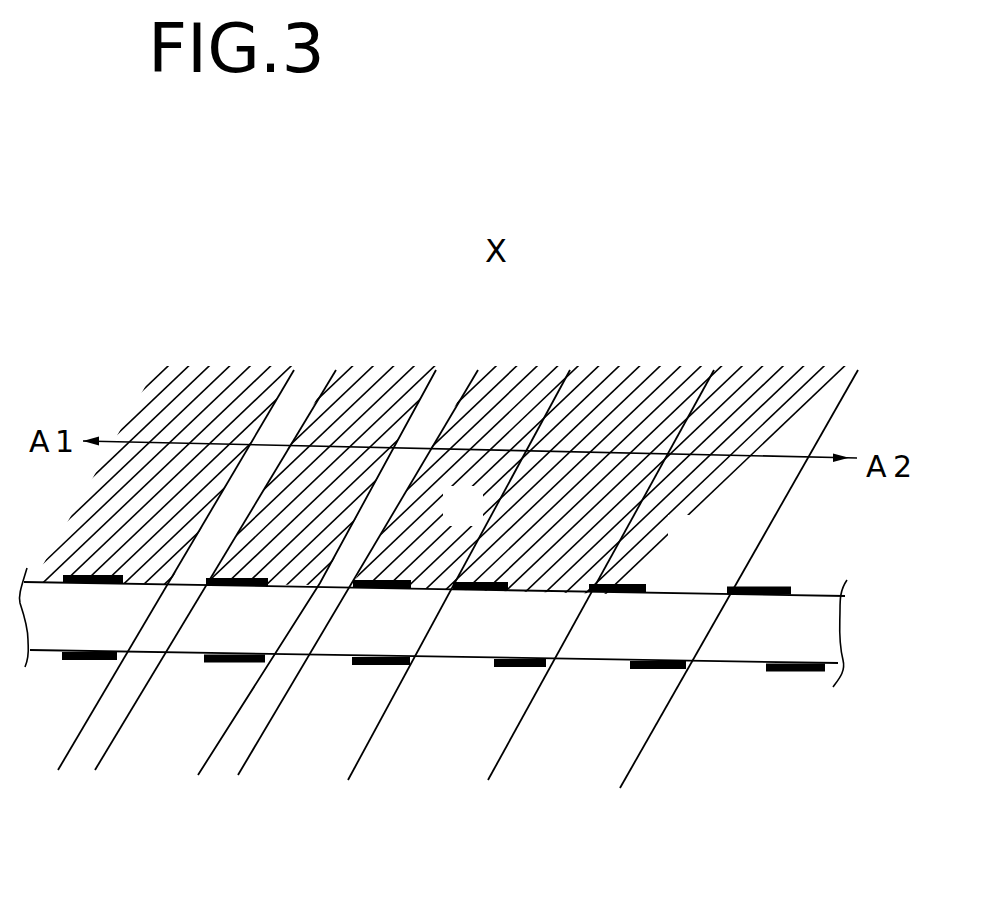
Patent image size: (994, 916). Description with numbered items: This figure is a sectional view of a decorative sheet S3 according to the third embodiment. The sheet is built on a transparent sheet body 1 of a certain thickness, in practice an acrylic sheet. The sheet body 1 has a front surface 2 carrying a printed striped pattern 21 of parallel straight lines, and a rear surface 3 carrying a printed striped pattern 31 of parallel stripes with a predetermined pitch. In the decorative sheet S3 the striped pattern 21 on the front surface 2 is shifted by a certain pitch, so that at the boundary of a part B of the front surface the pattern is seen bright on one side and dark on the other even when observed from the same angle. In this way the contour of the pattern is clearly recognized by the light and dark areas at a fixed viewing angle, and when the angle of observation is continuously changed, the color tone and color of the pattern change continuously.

The transparent sheet body 1 is at (817, 631).
The front surface 2 is at (468, 553).
The striped pattern 21 is at (635, 583).
The rear surface 3 is at (443, 718).
The striped pattern 31 is at (730, 667).
The decorative sheet S3 is at (712, 328).
The part of the front surface B is at (434, 571).